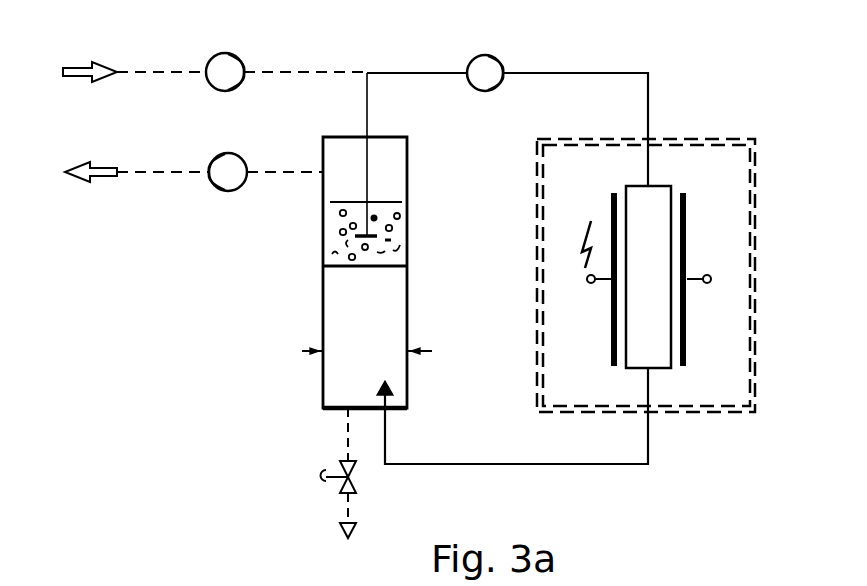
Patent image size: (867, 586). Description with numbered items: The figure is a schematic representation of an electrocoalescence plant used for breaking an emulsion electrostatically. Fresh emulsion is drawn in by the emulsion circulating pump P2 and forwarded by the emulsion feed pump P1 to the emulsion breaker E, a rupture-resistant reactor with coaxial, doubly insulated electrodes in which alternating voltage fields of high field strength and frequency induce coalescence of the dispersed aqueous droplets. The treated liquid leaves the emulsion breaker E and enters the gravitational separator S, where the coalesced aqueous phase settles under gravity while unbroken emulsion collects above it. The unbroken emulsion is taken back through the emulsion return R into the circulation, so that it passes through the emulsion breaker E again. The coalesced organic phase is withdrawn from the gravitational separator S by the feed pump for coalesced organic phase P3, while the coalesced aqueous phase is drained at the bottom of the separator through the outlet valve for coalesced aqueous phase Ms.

The emulsion feed pump P1 is at (507, 97).
The emulsion circulating pump P2 is at (286, 48).
The feed pump for coalesced organic phase P3 is at (266, 153).
The emulsion return R is at (372, 154).
The gravitational separator S is at (475, 300).
The emulsion breaker E is at (646, 275).
The outlet valve for coalesced aqueous phase Ms is at (316, 473).